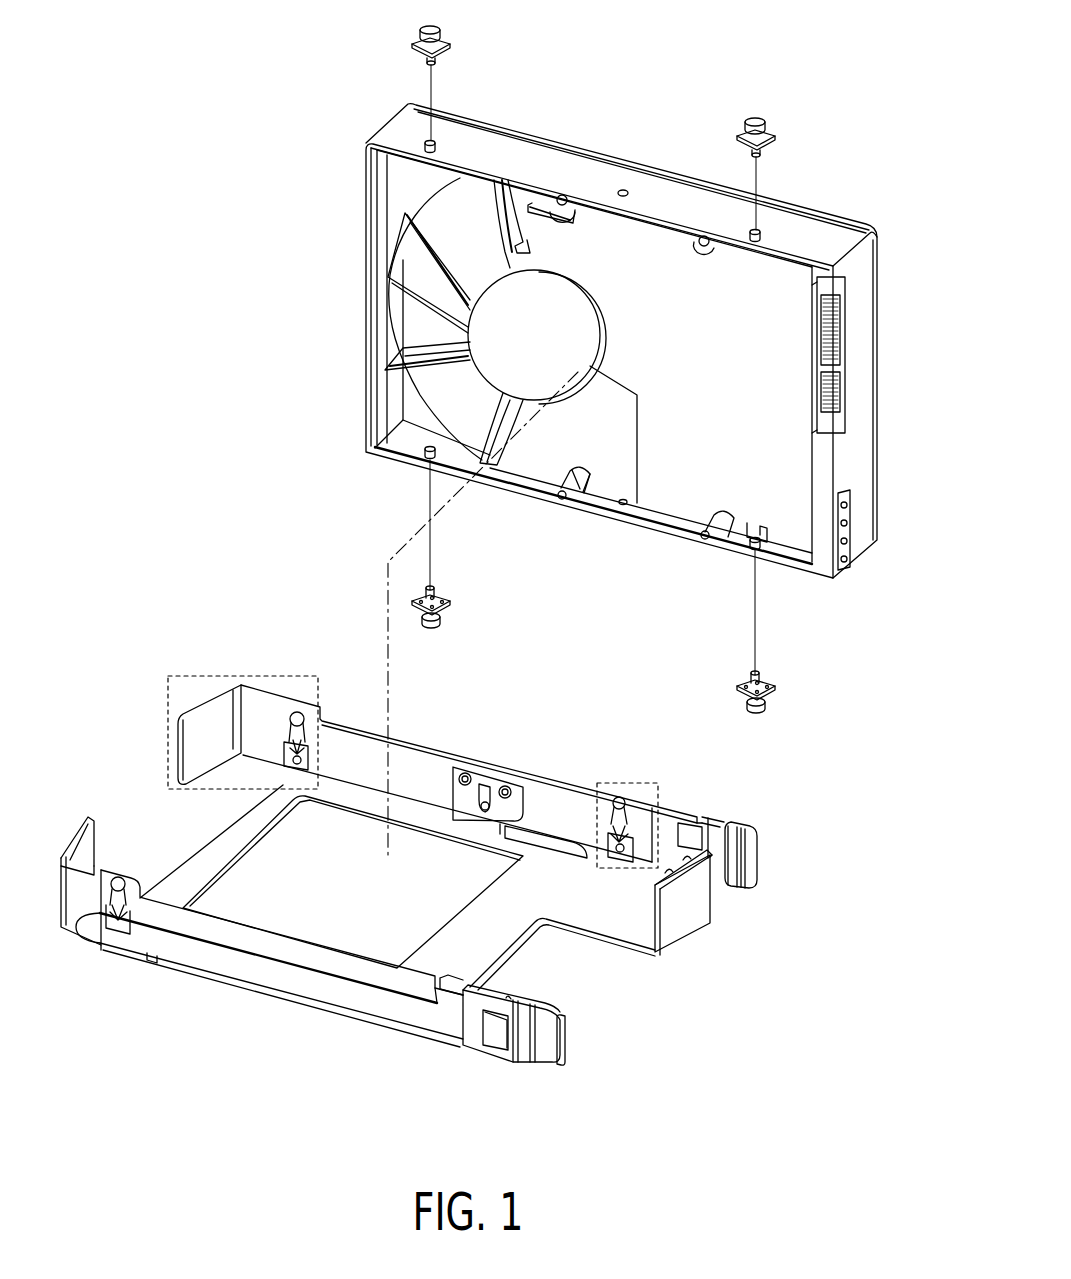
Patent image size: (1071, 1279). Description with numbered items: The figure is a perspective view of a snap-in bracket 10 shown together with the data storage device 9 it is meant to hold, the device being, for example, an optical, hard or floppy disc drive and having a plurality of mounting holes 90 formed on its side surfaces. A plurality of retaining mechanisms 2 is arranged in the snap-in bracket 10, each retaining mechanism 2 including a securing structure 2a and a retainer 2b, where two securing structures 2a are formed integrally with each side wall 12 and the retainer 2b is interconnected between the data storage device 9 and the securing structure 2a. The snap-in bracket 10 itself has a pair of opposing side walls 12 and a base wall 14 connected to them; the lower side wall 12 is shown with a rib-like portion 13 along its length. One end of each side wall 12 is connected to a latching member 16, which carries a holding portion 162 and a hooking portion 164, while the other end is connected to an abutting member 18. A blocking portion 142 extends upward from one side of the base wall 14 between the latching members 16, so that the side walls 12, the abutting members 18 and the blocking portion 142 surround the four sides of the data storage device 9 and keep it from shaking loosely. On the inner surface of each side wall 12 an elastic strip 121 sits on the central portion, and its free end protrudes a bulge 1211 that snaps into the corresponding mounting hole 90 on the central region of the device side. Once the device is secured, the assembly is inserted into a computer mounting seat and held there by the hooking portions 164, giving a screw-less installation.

The data storage device 9 is at (358, 225).
The mounting holes 90 is at (428, 140).
The retaining mechanisms 2 is at (400, 764).
The securing structure 2a is at (298, 708).
The retainer 2b is at (462, 36).
The snap-in bracket 10 is at (410, 836).
The side walls 12 is at (428, 745).
The elastic strip 121 is at (511, 770).
The bulge 1211 is at (496, 798).
The reinforcing rib 13 is at (388, 1010).
The base wall 14 is at (618, 920).
The blocking portion 142 is at (698, 920).
The latching member 16 is at (613, 947).
The holding portion 162 is at (568, 1040).
The hooking portion 164 is at (493, 1025).
The abutting member 18 is at (186, 730).